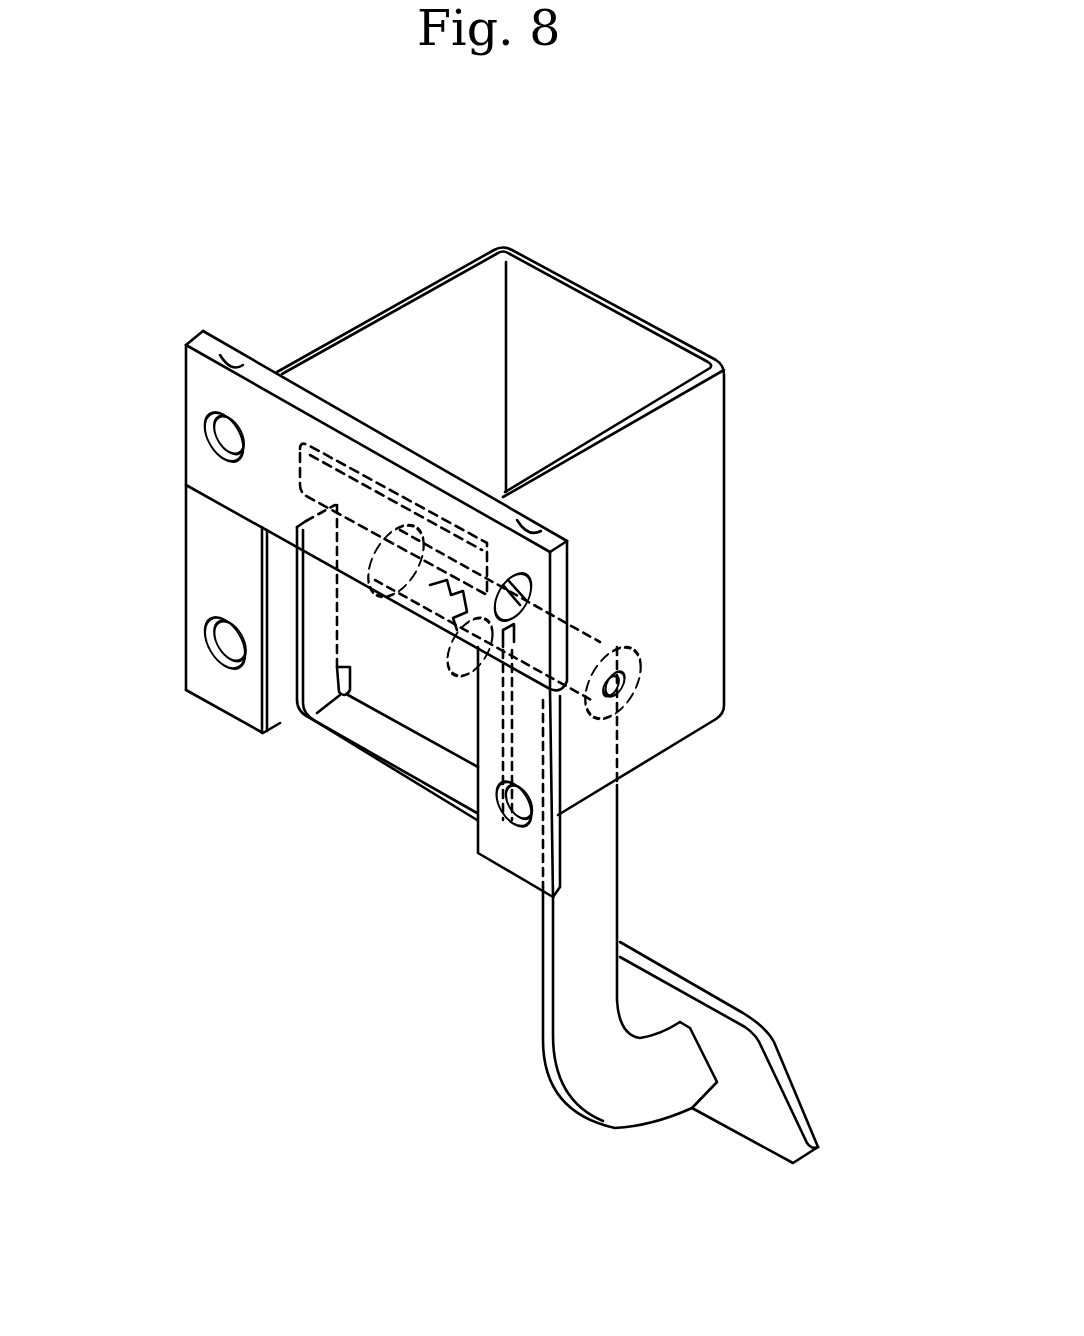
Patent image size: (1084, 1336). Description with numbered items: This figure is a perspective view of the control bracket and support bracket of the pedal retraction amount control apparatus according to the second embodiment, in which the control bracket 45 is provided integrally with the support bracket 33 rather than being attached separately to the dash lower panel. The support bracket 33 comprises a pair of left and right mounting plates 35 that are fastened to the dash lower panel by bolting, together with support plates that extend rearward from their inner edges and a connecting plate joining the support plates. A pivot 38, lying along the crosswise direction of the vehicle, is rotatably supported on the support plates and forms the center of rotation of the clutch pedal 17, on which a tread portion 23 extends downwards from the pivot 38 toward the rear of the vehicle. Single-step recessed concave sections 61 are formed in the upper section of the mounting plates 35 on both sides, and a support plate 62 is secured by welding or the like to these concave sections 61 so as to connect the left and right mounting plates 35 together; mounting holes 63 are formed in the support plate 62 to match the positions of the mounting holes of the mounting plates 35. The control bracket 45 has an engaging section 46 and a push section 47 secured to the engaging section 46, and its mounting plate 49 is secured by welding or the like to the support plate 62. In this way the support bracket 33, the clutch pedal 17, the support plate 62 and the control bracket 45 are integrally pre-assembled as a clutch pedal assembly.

The clutch pedal 17 is at (589, 1126).
The tread portion 23 is at (793, 1074).
The support bracket 33 is at (727, 433).
The mounting plates 35 is at (217, 690).
The pivot 38 is at (640, 686).
The control bracket 45 is at (411, 760).
The engaging section 46 is at (370, 678).
The push section 47 is at (555, 725).
The mounting plate 49 is at (365, 468).
The concave sections 61 is at (222, 356).
The support plate 62 is at (258, 482).
The mounting holes 63 is at (215, 438).